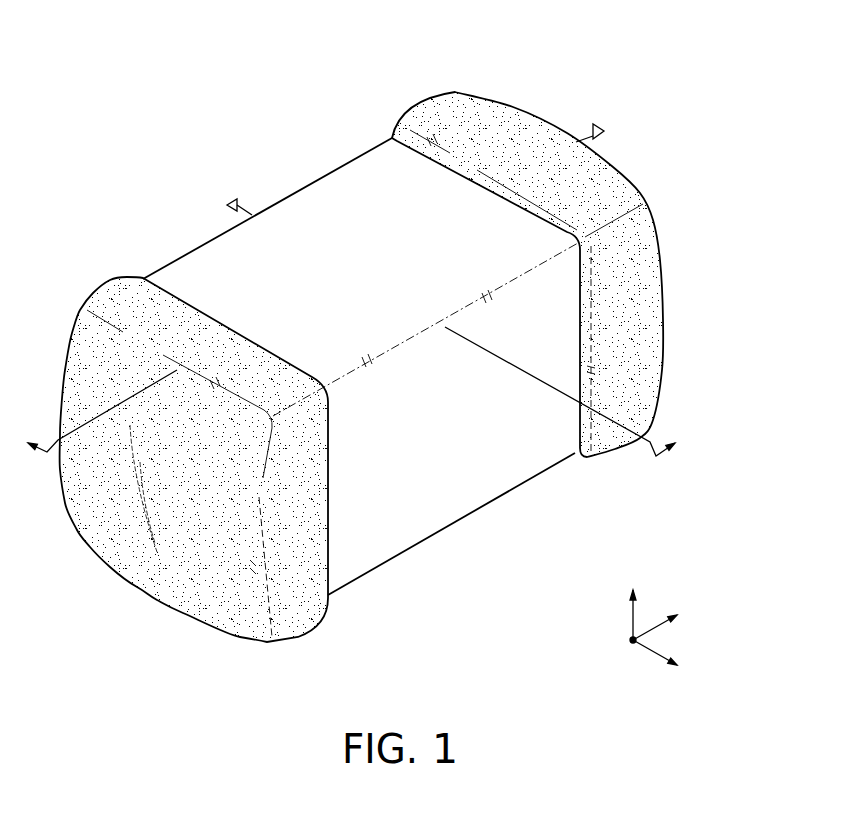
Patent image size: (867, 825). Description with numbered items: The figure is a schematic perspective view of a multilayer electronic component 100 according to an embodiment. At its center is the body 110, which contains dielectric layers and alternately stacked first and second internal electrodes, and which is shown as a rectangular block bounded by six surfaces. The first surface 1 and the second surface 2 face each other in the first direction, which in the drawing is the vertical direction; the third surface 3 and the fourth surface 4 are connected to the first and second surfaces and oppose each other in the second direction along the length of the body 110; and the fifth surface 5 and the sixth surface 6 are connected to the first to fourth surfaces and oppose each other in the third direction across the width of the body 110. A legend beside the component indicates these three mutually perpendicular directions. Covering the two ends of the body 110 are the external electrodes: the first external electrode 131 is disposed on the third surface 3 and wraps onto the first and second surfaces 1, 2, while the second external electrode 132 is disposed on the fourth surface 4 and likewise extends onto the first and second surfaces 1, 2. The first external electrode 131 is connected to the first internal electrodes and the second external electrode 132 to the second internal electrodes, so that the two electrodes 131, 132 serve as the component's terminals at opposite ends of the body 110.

The multilayer electronic component 100 is at (243, 35).
The body 110 is at (409, 357).
The first external electrode 131 is at (190, 432).
The second external electrode 132 is at (527, 243).
The first surface 1 is at (372, 181).
The second surface 2 is at (428, 528).
The third surface 3 is at (113, 515).
The fourth surface 4 is at (497, 123).
The fifth surface 5 is at (207, 253).
The sixth surface 6 is at (493, 472).